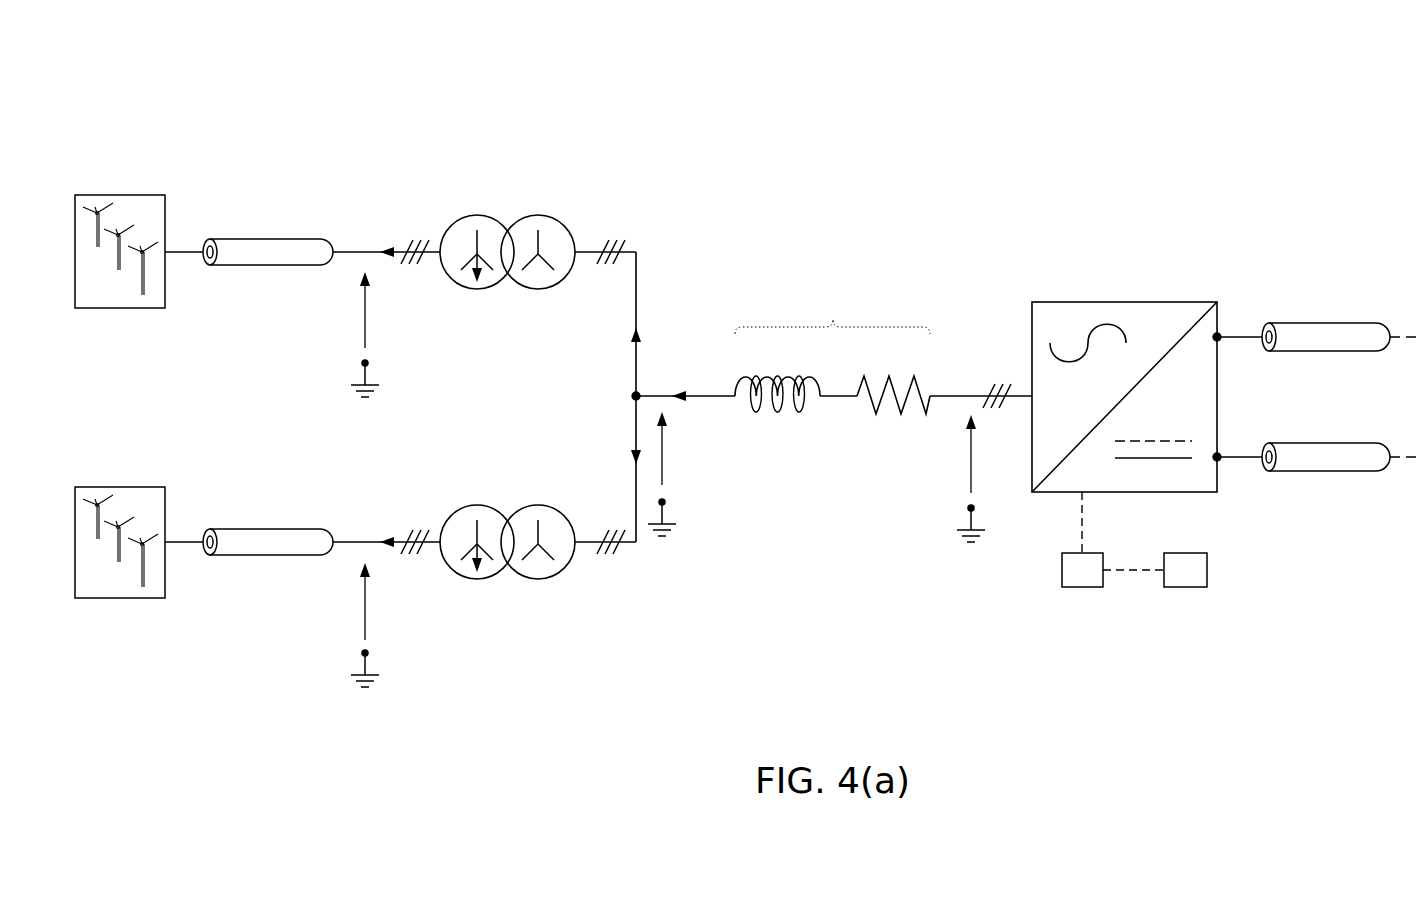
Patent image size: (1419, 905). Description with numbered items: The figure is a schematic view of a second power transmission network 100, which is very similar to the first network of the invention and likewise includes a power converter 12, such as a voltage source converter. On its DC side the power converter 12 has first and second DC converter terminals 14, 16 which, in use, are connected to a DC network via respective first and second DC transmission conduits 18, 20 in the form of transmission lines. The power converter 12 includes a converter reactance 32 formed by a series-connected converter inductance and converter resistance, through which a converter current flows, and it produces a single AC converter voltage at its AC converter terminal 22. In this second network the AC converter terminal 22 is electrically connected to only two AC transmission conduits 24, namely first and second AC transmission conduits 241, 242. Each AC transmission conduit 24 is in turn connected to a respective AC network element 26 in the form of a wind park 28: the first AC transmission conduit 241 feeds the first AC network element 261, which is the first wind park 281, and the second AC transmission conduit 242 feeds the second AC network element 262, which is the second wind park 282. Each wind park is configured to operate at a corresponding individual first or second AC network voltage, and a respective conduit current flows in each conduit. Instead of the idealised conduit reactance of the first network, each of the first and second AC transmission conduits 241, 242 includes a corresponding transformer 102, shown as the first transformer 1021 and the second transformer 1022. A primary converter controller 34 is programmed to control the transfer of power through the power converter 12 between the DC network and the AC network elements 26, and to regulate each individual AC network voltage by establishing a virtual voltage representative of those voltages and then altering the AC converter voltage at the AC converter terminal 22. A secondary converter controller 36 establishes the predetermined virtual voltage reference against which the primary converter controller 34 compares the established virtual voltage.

The second power transmission network 100 is at (898, 152).
The power converter 12 is at (1136, 302).
The first DC converter terminal 14 is at (1220, 333).
The second DC converter terminal 16 is at (1220, 460).
The first DC transmission conduit 18 is at (1330, 322).
The second DC transmission conduit 20 is at (1330, 472).
The AC converter terminal 22 is at (631, 396).
The AC transmission conduit 24 is at (249, 431).
The AC network element 26 is at (116, 398).
The wind park 28 is at (116, 398).
The converter reactance 32 is at (833, 319).
The primary converter controller 34 is at (1082, 587).
The secondary converter controller 36 is at (1185, 587).
The transformer 102 is at (538, 399).
The first AC network element 261 is at (116, 214).
The first wind park 281 is at (120, 195).
The second AC network element 262 is at (116, 581).
The second wind park 282 is at (120, 598).
The first AC transmission conduit 241 is at (268, 266).
The second AC transmission conduit 242 is at (268, 556).
The first transformer 1021 is at (538, 215).
The second transformer 1022 is at (535, 580).